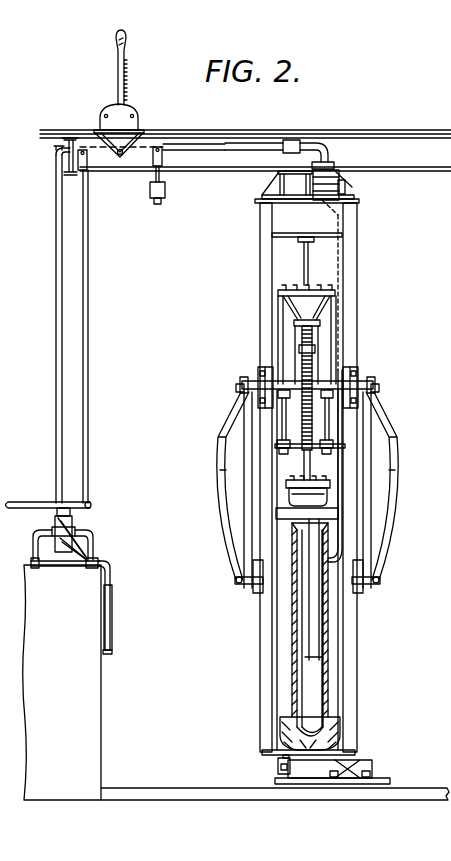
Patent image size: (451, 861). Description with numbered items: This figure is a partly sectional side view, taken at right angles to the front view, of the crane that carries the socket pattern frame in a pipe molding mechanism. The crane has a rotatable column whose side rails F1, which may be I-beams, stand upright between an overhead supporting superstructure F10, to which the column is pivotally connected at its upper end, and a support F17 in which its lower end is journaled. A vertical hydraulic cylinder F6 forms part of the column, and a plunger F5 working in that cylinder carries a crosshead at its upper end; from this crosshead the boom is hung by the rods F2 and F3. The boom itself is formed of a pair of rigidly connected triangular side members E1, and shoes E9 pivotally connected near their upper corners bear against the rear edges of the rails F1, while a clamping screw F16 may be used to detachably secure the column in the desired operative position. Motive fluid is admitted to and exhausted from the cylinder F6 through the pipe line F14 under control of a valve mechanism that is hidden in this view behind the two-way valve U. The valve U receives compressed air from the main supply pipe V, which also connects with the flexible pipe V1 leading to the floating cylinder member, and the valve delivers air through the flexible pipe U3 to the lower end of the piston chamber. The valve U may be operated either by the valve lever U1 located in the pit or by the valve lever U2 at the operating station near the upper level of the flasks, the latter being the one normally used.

The valve lever U2 is at (118, 78).
The pipe line F14 is at (56, 248).
The supporting superstructure F10 is at (278, 182).
The side rails F1 is at (262, 698).
The rods F2 is at (280, 330).
The plunger F5 is at (316, 362).
The shoes E9 is at (258, 373).
The rods F3 is at (280, 412).
The triangular side members E1 is at (244, 522).
The vertical hydraulic cylinder F6 is at (327, 655).
The clamping screw F16 is at (277, 768).
The support F17 is at (353, 768).
The valve lever U1 is at (33, 502).
The two-way valve U is at (73, 525).
The flexible pipe U3 is at (81, 545).
The main compressed air supply pipe V is at (57, 568).
The flexible pipe V1 is at (117, 645).